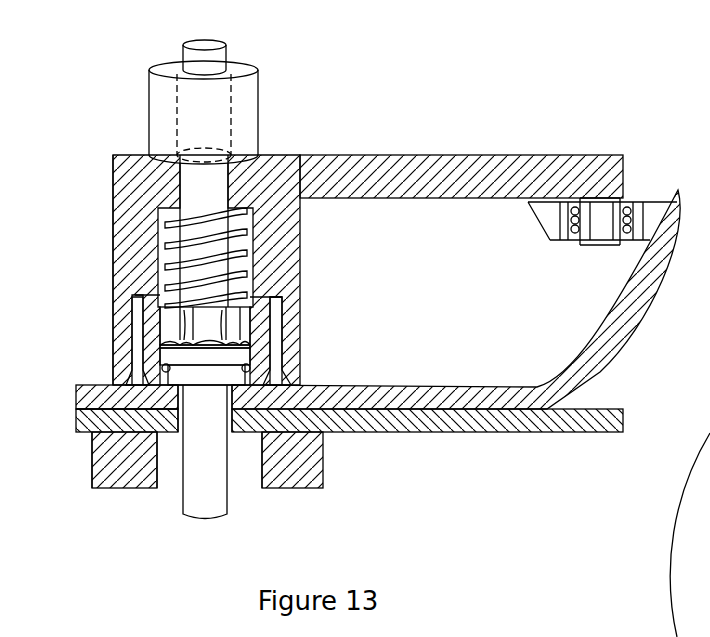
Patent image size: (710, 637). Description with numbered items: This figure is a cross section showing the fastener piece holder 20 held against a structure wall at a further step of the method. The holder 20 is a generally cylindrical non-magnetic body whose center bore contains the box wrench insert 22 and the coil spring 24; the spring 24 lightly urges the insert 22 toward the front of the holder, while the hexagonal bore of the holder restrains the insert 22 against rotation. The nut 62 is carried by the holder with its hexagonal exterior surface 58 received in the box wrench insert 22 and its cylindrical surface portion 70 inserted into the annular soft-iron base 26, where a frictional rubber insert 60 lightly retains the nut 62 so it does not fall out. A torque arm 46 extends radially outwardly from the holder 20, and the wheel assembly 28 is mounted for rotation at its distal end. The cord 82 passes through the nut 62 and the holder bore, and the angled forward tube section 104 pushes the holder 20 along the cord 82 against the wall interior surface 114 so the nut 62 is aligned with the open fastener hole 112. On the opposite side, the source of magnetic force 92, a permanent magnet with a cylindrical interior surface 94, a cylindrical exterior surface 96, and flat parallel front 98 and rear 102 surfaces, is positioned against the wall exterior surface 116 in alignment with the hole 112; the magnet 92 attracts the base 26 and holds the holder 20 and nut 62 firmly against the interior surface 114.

The fastener piece holder 20 is at (316, 149).
The box wrench insert 22 is at (158, 298).
The spring 24 is at (165, 230).
The base 26 is at (303, 350).
The wheel assembly 28 is at (655, 202).
The torque arm 46 is at (462, 155).
The hexagonal exterior surface 58 is at (252, 298).
The frictional rubber insert 60 is at (162, 368).
The nut 62 is at (165, 352).
The nut cylindrical surface portion 70 is at (245, 354).
The cord 82 is at (213, 58).
The source of magnetic force 92 is at (318, 490).
The magnet cylindrical interior surface 94 is at (253, 478).
The magnet cylindrical exterior surface 96 is at (92, 468).
The magnet front surface 98 is at (95, 422).
The magnet rear surface 102 is at (125, 488).
The forward tube section 104 is at (255, 95).
The open fastener hole 112 is at (177, 440).
The wall interior surface 114 is at (364, 386).
The wall exterior surface 116 is at (82, 433).